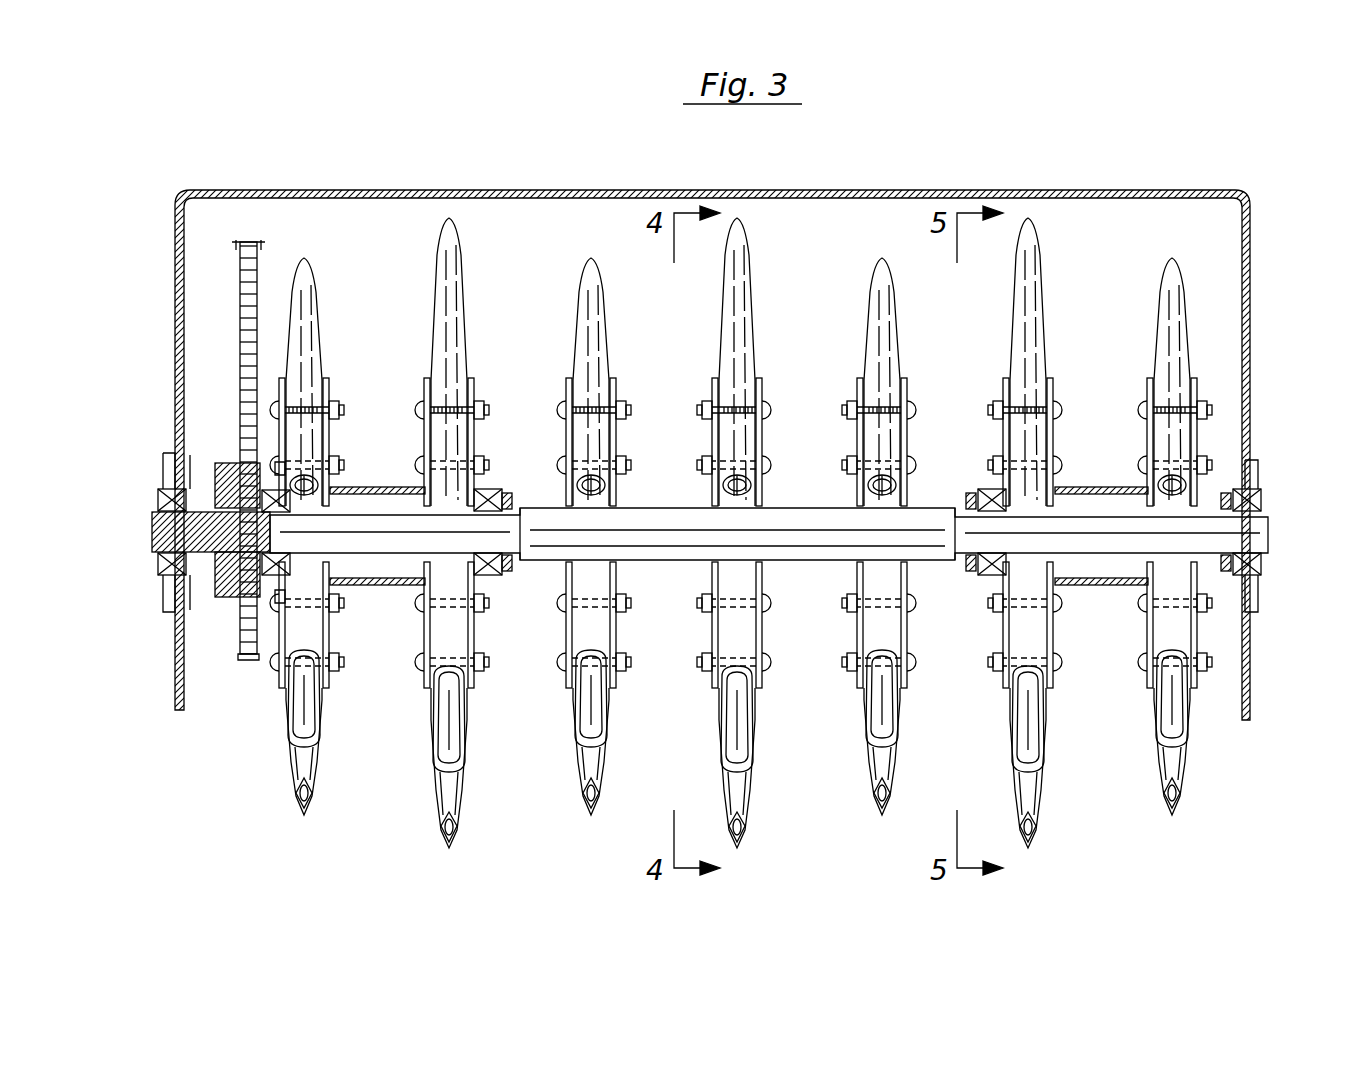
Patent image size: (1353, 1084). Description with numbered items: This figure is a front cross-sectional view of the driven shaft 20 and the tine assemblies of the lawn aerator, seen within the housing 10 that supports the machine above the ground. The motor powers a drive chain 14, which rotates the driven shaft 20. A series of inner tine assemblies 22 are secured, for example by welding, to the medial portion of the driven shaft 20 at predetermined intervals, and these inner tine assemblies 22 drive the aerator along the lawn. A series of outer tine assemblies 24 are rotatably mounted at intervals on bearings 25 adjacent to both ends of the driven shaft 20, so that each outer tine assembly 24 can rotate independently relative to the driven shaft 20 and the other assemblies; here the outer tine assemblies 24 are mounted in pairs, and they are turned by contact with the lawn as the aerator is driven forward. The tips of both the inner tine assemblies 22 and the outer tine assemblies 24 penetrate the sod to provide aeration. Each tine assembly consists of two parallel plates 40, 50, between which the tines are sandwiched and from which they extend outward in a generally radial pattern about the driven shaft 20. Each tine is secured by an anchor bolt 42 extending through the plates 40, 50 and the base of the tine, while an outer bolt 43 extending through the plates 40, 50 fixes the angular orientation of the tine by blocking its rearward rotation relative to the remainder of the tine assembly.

The housing 10 is at (330, 190).
The drive chain 14 is at (243, 332).
The driven shaft 20 is at (762, 540).
The inner tine assembly 22 is at (591, 816).
The outer tine assembly 24 is at (306, 814).
The bearing 25 is at (236, 462).
The parallel plate 40 is at (713, 446).
The anchor bolt 42 is at (700, 472).
The outer bolt 43 is at (706, 406).
The parallel plate 50 is at (770, 440).